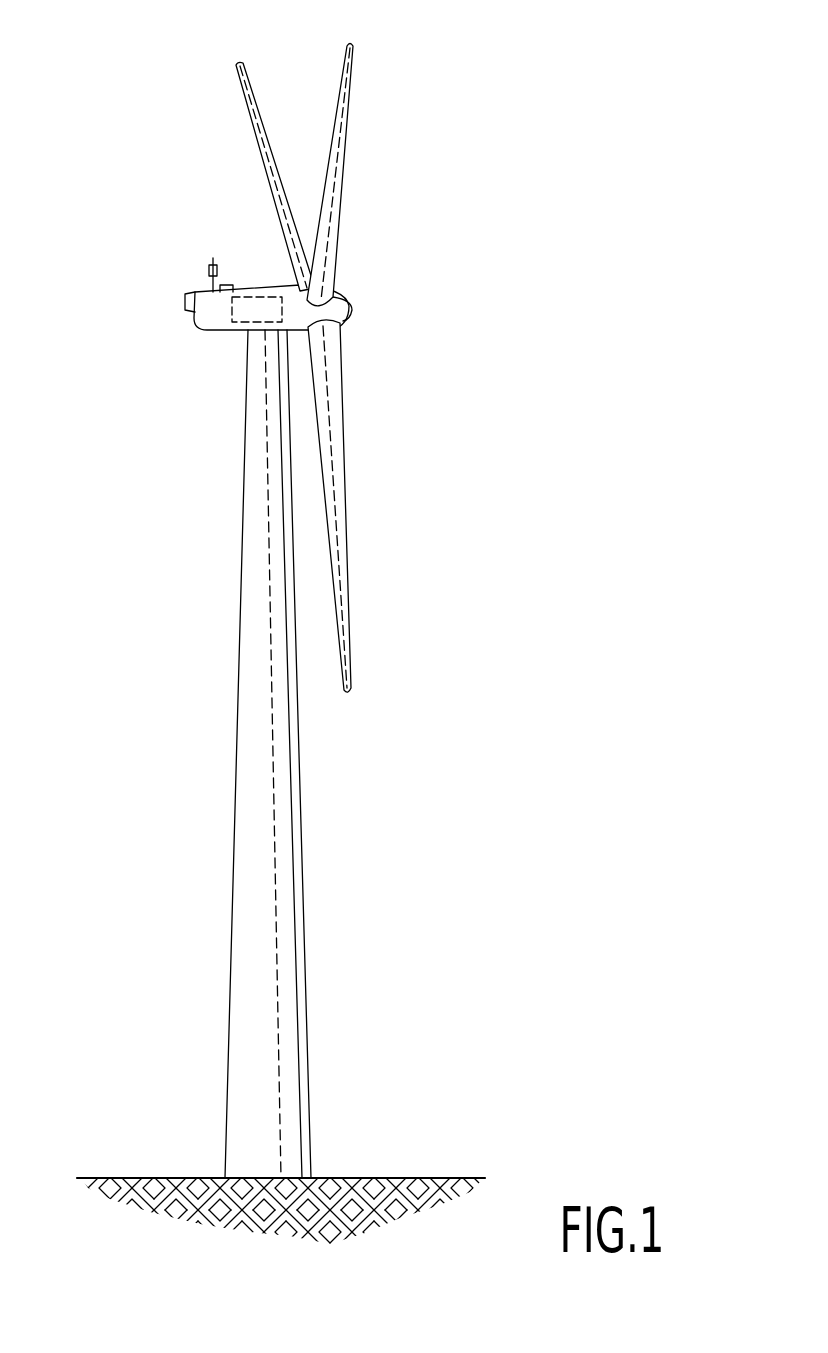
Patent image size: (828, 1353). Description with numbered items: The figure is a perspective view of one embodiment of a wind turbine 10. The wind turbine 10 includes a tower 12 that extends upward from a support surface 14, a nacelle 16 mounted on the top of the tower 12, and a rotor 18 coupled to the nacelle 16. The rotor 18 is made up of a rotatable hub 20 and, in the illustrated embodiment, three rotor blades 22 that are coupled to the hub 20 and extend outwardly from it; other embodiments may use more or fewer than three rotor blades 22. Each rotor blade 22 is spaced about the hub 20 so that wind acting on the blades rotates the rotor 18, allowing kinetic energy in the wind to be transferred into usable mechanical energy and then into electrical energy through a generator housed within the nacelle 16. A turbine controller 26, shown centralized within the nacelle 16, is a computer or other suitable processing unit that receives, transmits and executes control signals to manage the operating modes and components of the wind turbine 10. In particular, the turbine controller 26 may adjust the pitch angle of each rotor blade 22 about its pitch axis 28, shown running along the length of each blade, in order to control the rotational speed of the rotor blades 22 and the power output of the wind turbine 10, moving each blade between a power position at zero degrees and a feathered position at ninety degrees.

The wind turbine 10 is at (453, 118).
The tower 12 is at (248, 878).
The support surface 14 is at (173, 1178).
The nacelle 16 is at (223, 333).
The rotor 18 is at (319, 348).
The rotatable hub 20 is at (347, 308).
The rotor blade 22 is at (342, 83).
The turbine controller 26 is at (262, 297).
The pitch axis 28 is at (282, 196).